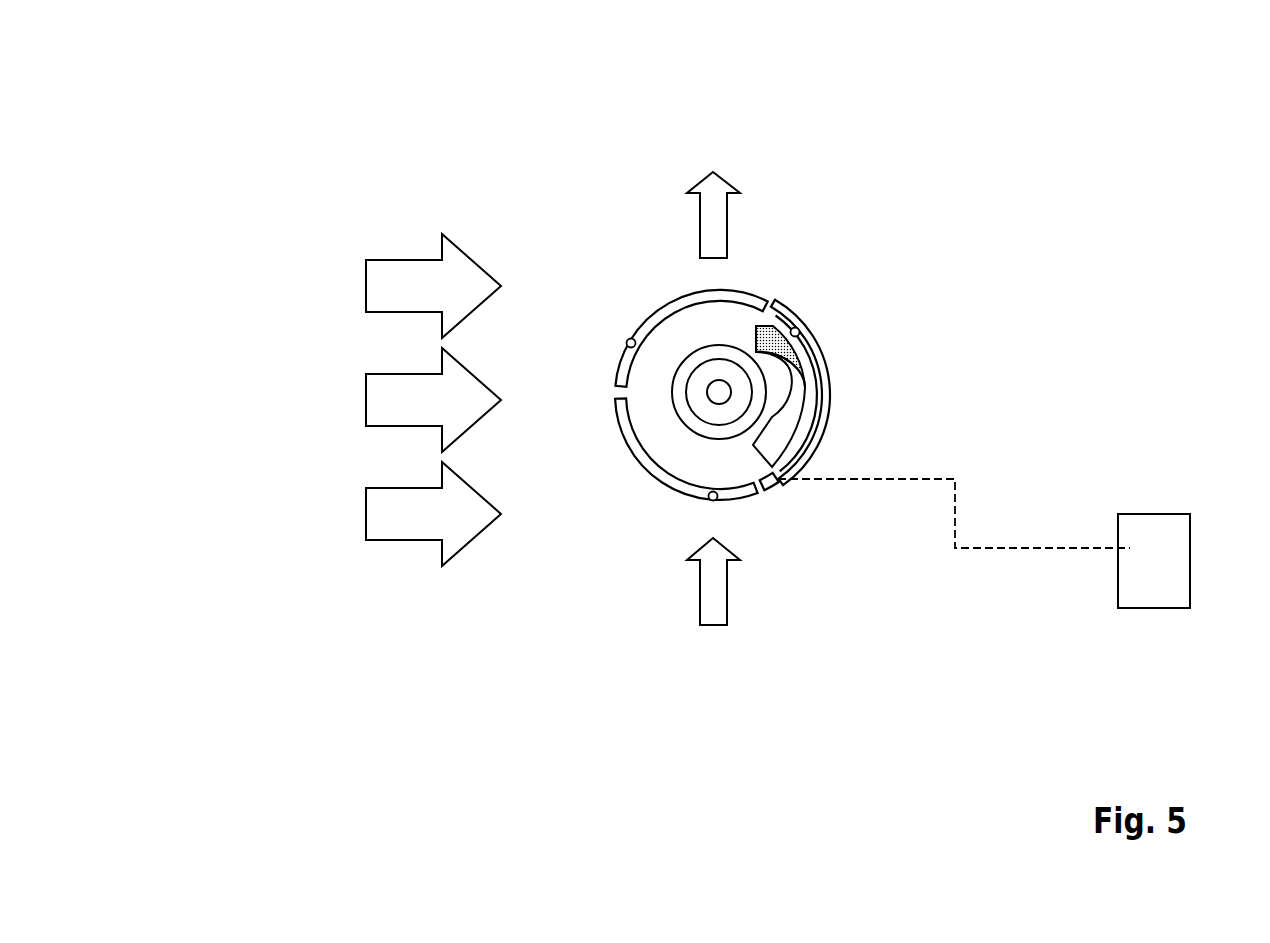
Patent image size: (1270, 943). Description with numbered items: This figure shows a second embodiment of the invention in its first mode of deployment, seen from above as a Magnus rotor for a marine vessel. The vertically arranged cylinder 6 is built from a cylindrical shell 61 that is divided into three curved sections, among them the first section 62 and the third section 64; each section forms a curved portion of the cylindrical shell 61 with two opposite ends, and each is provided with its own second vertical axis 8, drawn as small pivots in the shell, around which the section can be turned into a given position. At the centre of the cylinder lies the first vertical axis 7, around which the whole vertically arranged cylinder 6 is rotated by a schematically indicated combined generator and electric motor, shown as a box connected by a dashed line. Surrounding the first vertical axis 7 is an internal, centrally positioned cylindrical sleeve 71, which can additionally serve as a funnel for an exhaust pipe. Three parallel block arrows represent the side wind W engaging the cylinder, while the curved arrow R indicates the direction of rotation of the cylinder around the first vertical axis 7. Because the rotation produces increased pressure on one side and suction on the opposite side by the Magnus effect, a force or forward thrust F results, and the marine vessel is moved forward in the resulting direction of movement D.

The vertically arranged cylinder 6 is at (885, 362).
The cylindrical shell 61 is at (697, 278).
The first section 62 is at (637, 455).
The third section 64 is at (682, 300).
The first vertical axis 7 is at (720, 396).
The internal cylindrical sleeve 71 is at (695, 432).
The second vertical axis 8 is at (628, 341).
The direction of movement D is at (757, 207).
The force or forward thrust F is at (757, 585).
The direction of rotation R is at (788, 432).
The wind W is at (322, 408).